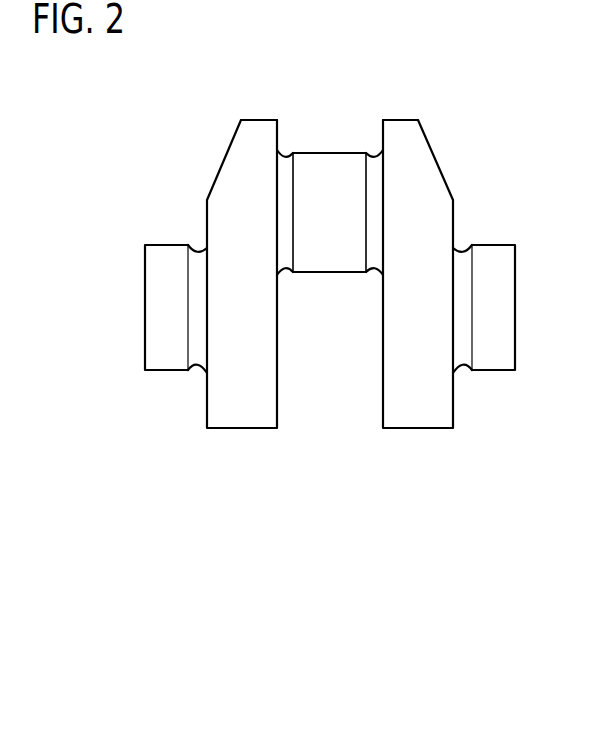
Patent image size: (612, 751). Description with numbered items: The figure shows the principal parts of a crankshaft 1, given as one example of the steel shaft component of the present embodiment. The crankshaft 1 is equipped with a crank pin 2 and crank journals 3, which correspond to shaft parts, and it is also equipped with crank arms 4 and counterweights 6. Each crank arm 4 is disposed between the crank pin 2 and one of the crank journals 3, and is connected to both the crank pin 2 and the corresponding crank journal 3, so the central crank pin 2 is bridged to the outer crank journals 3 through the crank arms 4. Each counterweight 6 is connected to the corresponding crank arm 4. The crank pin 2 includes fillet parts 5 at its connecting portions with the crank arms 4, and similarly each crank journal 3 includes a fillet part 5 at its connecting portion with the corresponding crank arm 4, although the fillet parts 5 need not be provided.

The crankshaft 1 is at (478, 97).
The crank pin 2 is at (327, 272).
The crank journal 3 is at (167, 363).
The crank arm 4 is at (264, 135).
The fillet part 5 is at (194, 352).
The counterweight 6 is at (237, 397).